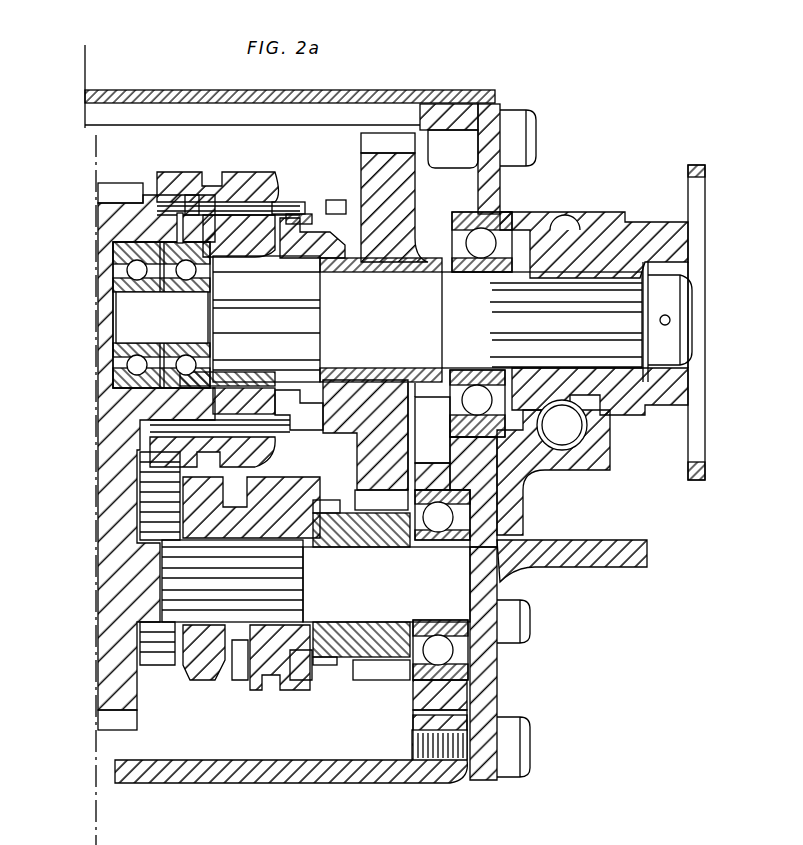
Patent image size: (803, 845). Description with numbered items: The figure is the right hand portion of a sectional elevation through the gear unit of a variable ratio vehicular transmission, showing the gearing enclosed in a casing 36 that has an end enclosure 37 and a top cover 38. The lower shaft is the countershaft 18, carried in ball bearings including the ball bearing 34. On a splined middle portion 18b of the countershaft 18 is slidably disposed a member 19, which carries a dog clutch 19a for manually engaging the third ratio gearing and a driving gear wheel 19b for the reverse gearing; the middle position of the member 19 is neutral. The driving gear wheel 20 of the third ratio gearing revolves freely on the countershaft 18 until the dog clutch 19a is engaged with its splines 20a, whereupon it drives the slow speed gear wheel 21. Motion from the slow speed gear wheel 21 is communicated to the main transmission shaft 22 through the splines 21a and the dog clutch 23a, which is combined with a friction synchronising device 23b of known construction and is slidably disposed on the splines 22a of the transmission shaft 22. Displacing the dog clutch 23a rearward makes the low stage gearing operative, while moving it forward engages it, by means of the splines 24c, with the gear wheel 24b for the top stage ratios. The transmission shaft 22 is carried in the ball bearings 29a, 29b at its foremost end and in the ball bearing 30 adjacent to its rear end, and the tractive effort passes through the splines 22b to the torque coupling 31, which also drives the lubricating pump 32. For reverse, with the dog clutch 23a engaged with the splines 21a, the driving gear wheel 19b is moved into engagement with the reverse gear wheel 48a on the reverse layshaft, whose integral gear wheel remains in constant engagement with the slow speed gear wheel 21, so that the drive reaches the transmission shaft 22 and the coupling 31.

The countershaft 18 is at (395, 598).
The splined middle portion 18b is at (238, 650).
The member 19 is at (237, 528).
The dog clutch 19a is at (300, 672).
The driving gear wheel 19b is at (200, 682).
The driving gear wheel 20 is at (380, 681).
The splines 20a is at (336, 500).
The slow speed gear wheel 21 is at (383, 143).
The splines 21a is at (338, 205).
The main transmission shaft 22 is at (392, 292).
The splines 22a is at (258, 266).
The splines 22b is at (492, 303).
The dog clutch 23a is at (260, 195).
The friction synchronising device 23b is at (297, 203).
The gear wheel 24b is at (105, 183).
The splines 24c is at (185, 200).
The ball bearing 29a is at (135, 242).
The ball bearing 29b is at (180, 215).
The ball bearing 30 is at (452, 215).
The torque coupling 31 is at (640, 250).
The lubricating pump 32 is at (568, 430).
The ball bearing 34 is at (487, 507).
The casing 36 is at (382, 776).
The end enclosure 37 is at (510, 562).
The top cover 38 is at (160, 92).
The reverse gear wheel 48a is at (158, 667).